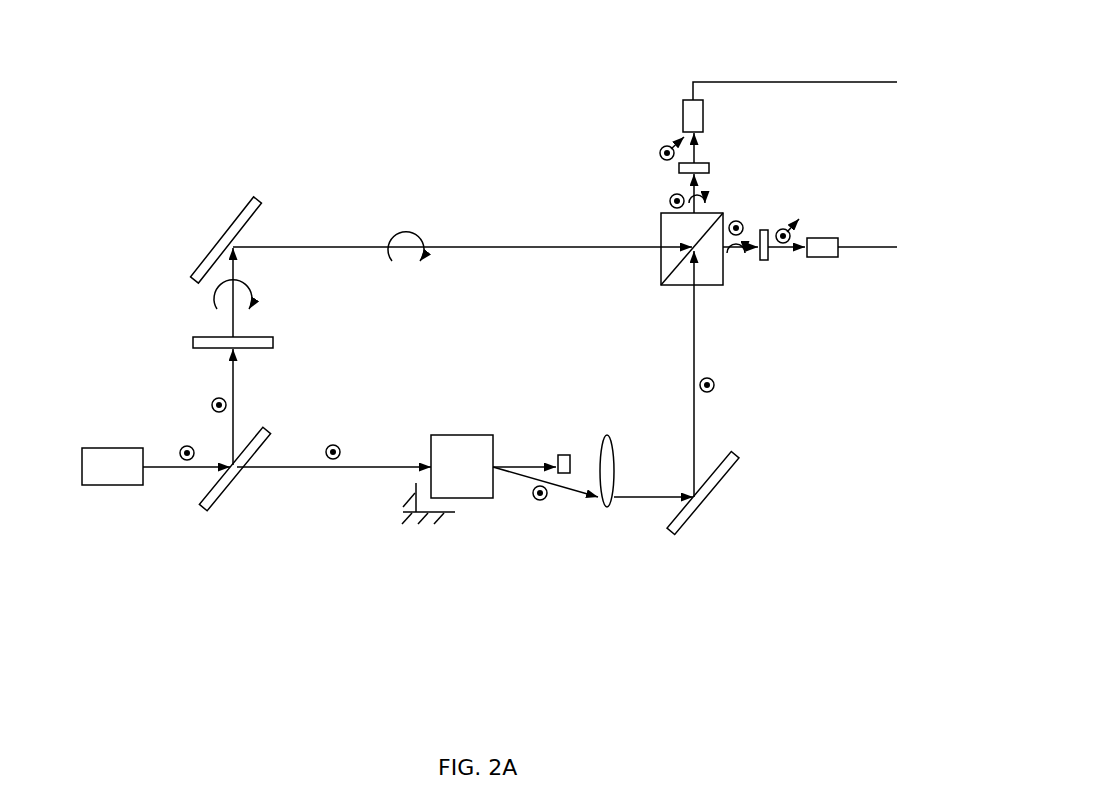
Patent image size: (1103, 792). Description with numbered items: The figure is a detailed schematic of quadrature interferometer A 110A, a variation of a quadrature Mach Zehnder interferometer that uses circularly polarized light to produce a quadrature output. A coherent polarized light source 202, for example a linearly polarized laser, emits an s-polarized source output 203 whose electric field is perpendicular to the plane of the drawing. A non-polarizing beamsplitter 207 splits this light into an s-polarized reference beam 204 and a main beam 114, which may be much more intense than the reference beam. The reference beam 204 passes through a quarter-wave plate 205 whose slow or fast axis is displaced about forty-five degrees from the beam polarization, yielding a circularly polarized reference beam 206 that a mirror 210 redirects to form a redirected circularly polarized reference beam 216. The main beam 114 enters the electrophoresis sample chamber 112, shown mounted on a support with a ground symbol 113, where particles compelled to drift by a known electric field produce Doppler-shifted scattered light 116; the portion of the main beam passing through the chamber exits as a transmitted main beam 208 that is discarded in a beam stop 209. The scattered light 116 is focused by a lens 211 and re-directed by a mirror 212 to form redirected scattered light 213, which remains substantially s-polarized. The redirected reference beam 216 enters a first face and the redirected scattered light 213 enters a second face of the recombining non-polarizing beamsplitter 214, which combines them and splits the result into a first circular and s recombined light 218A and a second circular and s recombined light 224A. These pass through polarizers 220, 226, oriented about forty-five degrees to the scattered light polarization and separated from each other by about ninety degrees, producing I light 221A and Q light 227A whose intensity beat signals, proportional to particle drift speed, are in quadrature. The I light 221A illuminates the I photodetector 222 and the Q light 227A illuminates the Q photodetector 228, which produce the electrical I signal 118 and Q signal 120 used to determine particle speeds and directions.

The quadrature interferometer A 110A is at (450, 106).
The electrophoresis sample chamber 112 is at (467, 503).
The ground connection 113 is at (418, 522).
The main beam 114 is at (326, 452).
The scattered light 116 is at (542, 503).
The I signal 118 is at (903, 82).
The Q signal 120 is at (903, 247).
The coherent polarized light source 202 is at (125, 447).
The s-polarized source output 203 is at (180, 453).
The reference beam 204 is at (213, 397).
The quarter-wave plate 205 is at (273, 348).
The circularly polarized reference beam 206 is at (252, 303).
The non-polarizing beamsplitter 207 is at (212, 515).
The transmitted main beam 208 is at (527, 459).
The beam stop 209 is at (573, 453).
The mirror 210 is at (193, 278).
The lens 211 is at (608, 434).
The mirror 212 is at (677, 537).
The redirected scattered light 213 is at (715, 385).
The recombining non-polarizing beamsplitter 214 is at (657, 290).
The redirected circularly polarized reference beam 216 is at (404, 227).
The first circular and s recombined light 218A is at (668, 203).
The polarizer 220 is at (677, 172).
The I light 221A is at (663, 150).
The I photodetector 222 is at (710, 127).
The second circular and s recombined light 224A is at (737, 212).
The polarizer 226 is at (761, 229).
The Q light 227A is at (845, 212).
The Q photodetector 228 is at (822, 258).